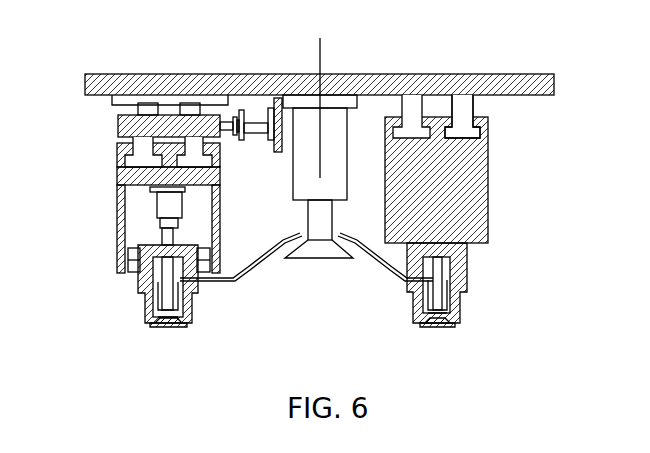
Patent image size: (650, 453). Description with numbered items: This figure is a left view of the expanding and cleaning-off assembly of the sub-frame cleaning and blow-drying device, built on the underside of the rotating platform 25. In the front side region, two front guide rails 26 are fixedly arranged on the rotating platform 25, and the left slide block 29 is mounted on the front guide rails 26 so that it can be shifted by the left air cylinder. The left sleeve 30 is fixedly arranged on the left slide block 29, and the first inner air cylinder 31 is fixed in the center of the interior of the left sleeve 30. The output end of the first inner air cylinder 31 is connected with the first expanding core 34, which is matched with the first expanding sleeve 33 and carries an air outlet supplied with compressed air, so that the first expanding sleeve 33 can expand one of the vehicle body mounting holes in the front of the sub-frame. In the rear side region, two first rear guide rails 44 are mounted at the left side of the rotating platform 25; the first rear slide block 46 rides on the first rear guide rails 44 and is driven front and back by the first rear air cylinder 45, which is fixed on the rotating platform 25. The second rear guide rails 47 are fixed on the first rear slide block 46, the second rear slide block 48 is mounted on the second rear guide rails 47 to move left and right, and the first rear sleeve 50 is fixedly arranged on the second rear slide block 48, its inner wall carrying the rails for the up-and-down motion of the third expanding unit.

The rotating platform 25 is at (152, 84).
The front guide rails 26 is at (462, 103).
The left slide block 29 is at (473, 162).
The left sleeve 30 is at (463, 255).
The first inner air cylinder 31 is at (448, 278).
The first expanding sleeve 33 is at (458, 303).
The first expanding core 34 is at (457, 318).
The first rear guide rails 44 is at (120, 103).
The first rear air cylinder 45 is at (262, 120).
The first rear slide block 46 is at (125, 128).
The second rear guide rails 47 is at (133, 160).
The second rear slide block 48 is at (123, 178).
The first rear sleeve 50 is at (117, 198).